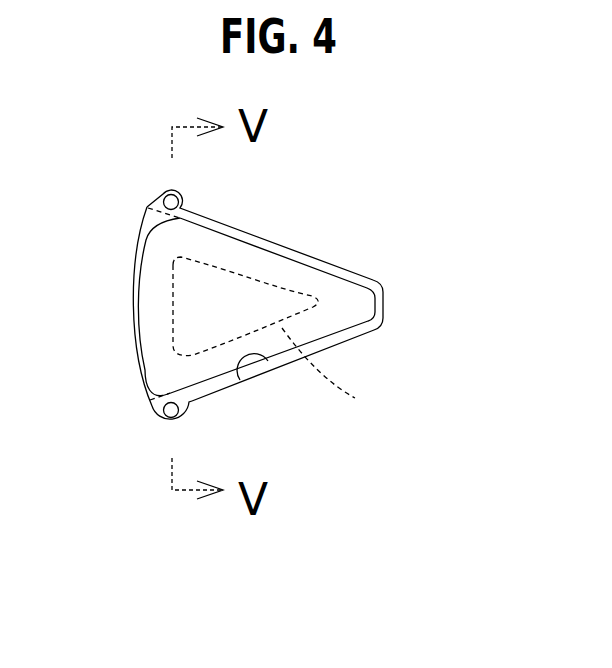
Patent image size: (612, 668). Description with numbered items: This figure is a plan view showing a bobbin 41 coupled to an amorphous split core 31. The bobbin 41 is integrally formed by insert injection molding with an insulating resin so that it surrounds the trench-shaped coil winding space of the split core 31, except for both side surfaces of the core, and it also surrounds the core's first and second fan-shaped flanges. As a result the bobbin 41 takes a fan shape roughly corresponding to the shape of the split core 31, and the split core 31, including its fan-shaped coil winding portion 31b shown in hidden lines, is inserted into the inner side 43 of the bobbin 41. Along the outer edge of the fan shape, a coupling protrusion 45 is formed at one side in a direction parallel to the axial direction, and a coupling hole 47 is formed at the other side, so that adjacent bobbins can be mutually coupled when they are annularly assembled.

The split core 31 is at (352, 315).
The coil winding portion 31b is at (338, 380).
The bobbin 41 is at (280, 242).
The inner side 43 is at (240, 378).
The coupling protrusion 45 is at (165, 196).
The coupling hole 47 is at (163, 414).